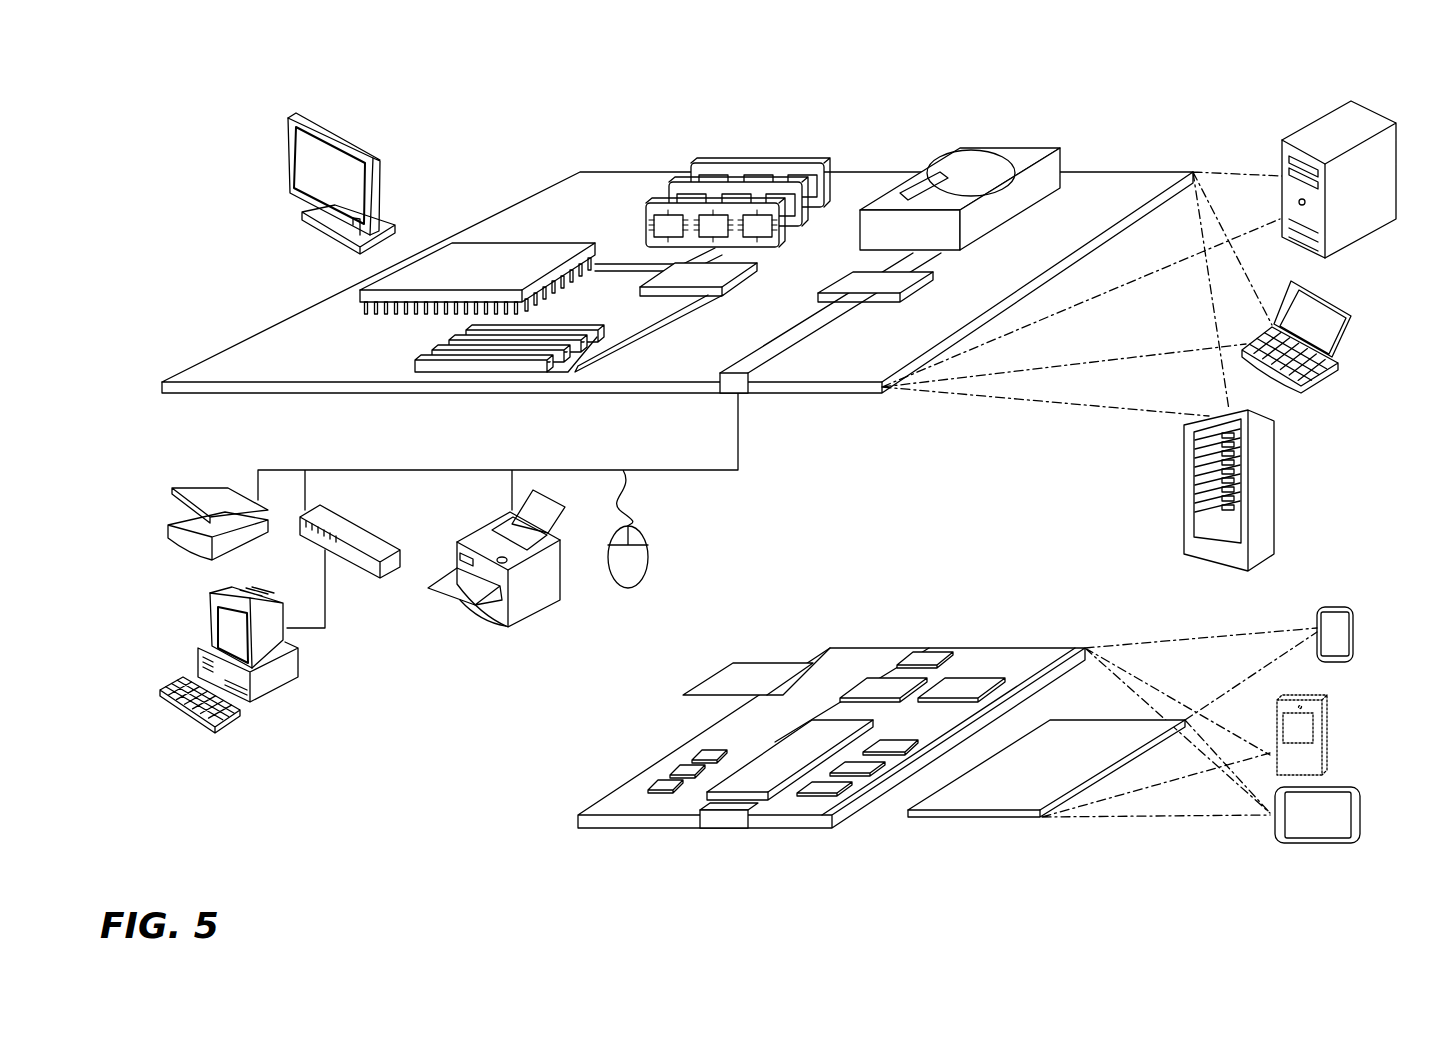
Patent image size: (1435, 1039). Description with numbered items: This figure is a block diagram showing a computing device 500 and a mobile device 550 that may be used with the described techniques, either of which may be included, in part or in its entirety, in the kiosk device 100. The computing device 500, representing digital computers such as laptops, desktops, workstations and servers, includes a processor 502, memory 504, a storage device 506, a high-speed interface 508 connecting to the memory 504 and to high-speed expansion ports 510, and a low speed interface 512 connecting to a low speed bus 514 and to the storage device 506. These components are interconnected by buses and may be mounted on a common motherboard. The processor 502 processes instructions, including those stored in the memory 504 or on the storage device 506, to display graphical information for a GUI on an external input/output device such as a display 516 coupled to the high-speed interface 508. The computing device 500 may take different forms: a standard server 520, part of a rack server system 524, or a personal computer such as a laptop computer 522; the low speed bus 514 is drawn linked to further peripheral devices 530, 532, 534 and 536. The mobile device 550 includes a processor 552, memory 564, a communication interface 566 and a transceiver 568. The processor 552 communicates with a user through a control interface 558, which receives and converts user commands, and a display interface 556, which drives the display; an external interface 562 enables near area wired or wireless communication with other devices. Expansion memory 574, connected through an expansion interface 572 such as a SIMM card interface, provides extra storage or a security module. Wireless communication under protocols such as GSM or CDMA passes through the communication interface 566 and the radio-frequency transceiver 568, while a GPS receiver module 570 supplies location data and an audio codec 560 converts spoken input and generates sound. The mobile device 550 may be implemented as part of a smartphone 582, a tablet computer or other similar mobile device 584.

The computing device 500 is at (258, 57).
The processor 502 is at (367, 298).
The memory 504 is at (719, 162).
The storage device 506 is at (1008, 143).
The high-speed interface 508 is at (686, 278).
The high-speed expansion ports 510 is at (417, 357).
The low speed interface 512 is at (860, 273).
The low speed bus 514 is at (745, 383).
The display 516 is at (298, 113).
The standard server 520 is at (1282, 155).
The laptop computer 522 is at (1328, 292).
The rack server system 524 is at (1184, 490).
The scanner 530 is at (210, 485).
The network hub 532 is at (365, 572).
The printer 534 is at (533, 617).
The mouse 536 is at (647, 570).
The mobile device 550 is at (554, 856).
The processor 552 is at (787, 763).
The display interface 556 is at (843, 795).
The control interface 558 is at (877, 770).
The audio codec 560 is at (888, 742).
The external interface 562 is at (722, 818).
The memory 564 is at (1100, 740).
The communication interface 566 is at (893, 685).
The transceiver 568 is at (973, 687).
The GPS receiver module 570 is at (930, 650).
The expansion interface 572 is at (810, 660).
The expansion memory 574 is at (733, 662).
The smartphone 582 is at (1338, 607).
The kiosk device 100 is at (1328, 708).
The tablet 584 is at (1362, 815).